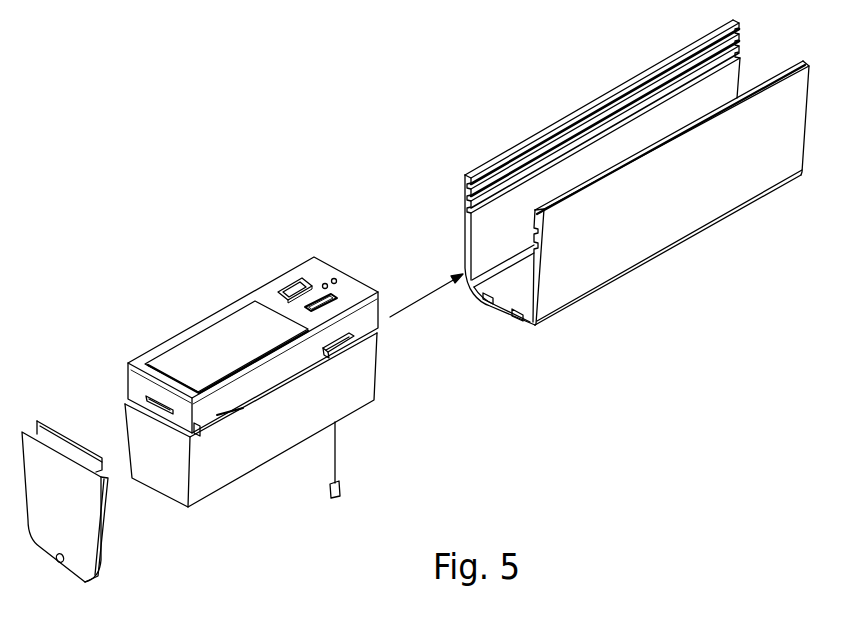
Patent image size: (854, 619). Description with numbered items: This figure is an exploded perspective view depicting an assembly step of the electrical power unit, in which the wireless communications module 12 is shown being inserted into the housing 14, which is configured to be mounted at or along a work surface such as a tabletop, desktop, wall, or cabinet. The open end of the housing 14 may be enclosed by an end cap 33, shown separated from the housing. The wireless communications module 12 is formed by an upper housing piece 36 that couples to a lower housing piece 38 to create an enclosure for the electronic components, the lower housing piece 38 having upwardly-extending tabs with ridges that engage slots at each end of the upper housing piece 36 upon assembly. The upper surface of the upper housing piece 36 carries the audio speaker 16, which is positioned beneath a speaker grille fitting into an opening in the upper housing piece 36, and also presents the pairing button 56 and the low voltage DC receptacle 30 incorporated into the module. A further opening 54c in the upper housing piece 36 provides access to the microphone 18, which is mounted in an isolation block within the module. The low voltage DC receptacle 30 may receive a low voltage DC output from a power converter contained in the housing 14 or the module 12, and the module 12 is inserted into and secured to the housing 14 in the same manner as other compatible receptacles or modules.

The wireless communications module 12 is at (212, 257).
The housing 14 is at (602, 265).
The audio speaker 16 is at (205, 341).
The microphone 18 is at (332, 467).
The low voltage DC receptacle 30 is at (336, 297).
The end cap 33 is at (107, 522).
The upper housing piece 36 is at (380, 315).
The lower housing piece 38 is at (378, 358).
The opening 54c is at (336, 277).
The pairing button 56 is at (289, 277).